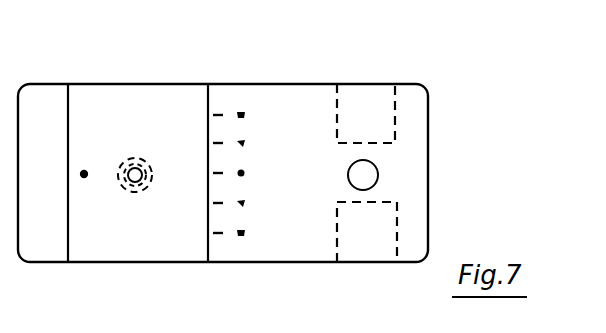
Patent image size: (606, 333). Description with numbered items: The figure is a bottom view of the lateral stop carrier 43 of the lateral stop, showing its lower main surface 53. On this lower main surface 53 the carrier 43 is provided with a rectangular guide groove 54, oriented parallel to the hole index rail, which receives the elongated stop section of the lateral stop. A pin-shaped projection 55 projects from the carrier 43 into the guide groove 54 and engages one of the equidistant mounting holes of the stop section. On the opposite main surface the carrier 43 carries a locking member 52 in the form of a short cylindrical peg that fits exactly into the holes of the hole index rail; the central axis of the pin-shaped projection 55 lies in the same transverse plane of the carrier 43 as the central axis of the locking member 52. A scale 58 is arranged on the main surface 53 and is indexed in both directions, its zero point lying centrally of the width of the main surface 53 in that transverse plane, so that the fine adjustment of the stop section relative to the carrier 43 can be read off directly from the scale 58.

The lateral stop carrier 43 is at (434, 134).
The locking member 52 is at (141, 190).
The lower main surface 53 is at (286, 232).
The guide groove 54 is at (207, 112).
The pin-shaped projection 55 is at (86, 178).
The scale 58 is at (250, 106).